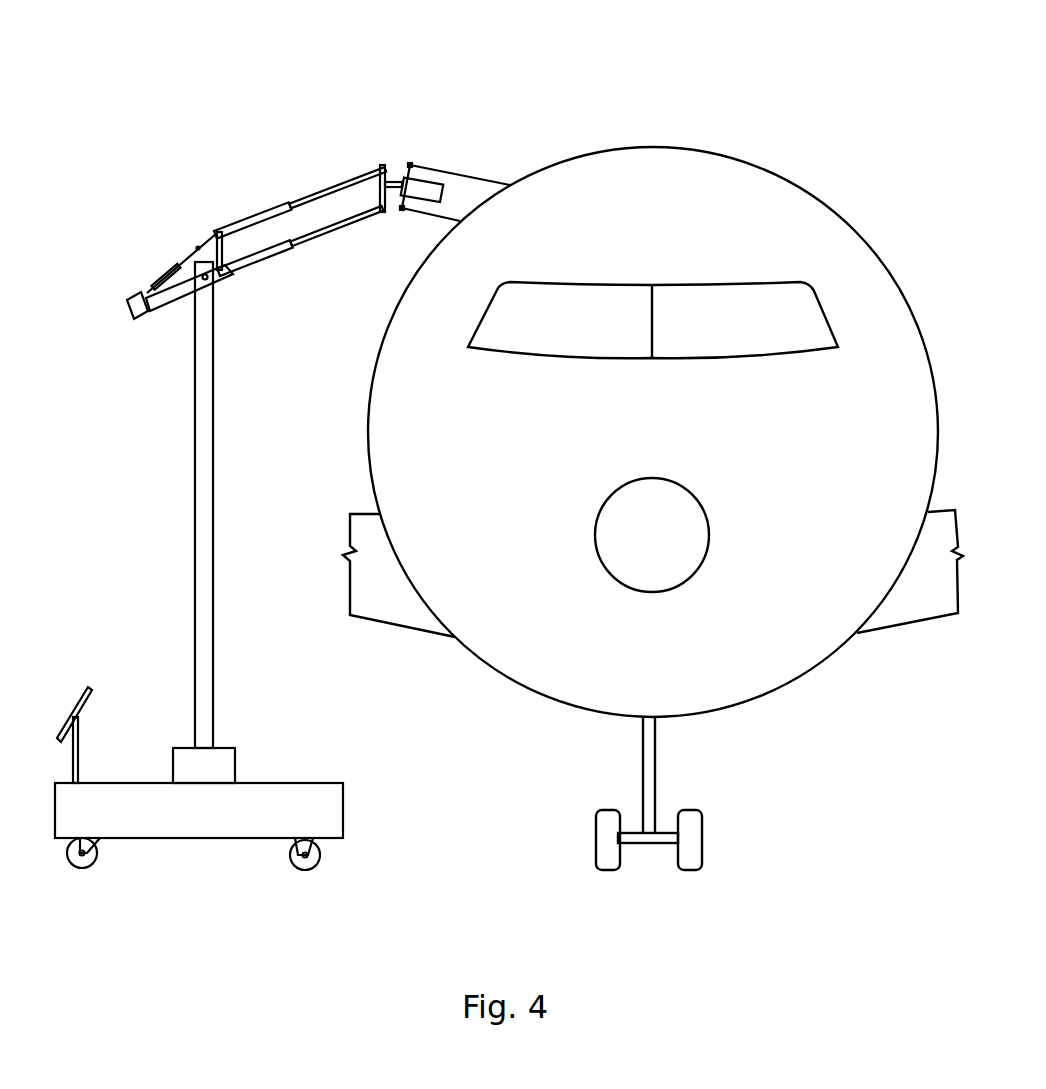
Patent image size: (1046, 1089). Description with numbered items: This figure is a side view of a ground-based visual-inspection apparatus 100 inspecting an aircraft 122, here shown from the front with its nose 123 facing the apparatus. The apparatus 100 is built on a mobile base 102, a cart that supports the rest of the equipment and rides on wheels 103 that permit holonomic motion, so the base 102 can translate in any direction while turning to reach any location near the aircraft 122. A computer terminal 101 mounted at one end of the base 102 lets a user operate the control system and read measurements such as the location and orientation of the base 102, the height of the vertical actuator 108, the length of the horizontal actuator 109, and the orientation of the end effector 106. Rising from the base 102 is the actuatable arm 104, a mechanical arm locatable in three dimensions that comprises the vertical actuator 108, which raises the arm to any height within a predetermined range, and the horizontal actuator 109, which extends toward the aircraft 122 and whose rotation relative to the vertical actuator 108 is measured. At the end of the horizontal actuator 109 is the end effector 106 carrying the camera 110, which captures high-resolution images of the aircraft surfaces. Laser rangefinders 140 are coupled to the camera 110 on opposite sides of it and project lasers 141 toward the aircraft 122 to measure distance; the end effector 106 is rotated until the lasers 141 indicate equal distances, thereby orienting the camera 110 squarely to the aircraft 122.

The ground-based visual-inspection apparatus 100 is at (206, 62).
The computer terminal 101 is at (87, 690).
The mobile base 102 is at (188, 800).
The wheels 103 is at (88, 865).
The actuatable arm 104 is at (193, 178).
The end effector 106 is at (393, 150).
The vertical actuator 108 is at (205, 372).
The horizontal actuator 109 is at (297, 200).
The camera 110 is at (430, 182).
The aircraft 122 is at (785, 212).
The nose 123 is at (700, 578).
The laser rangefinders 140 is at (412, 163).
The lasers 141 is at (498, 178).